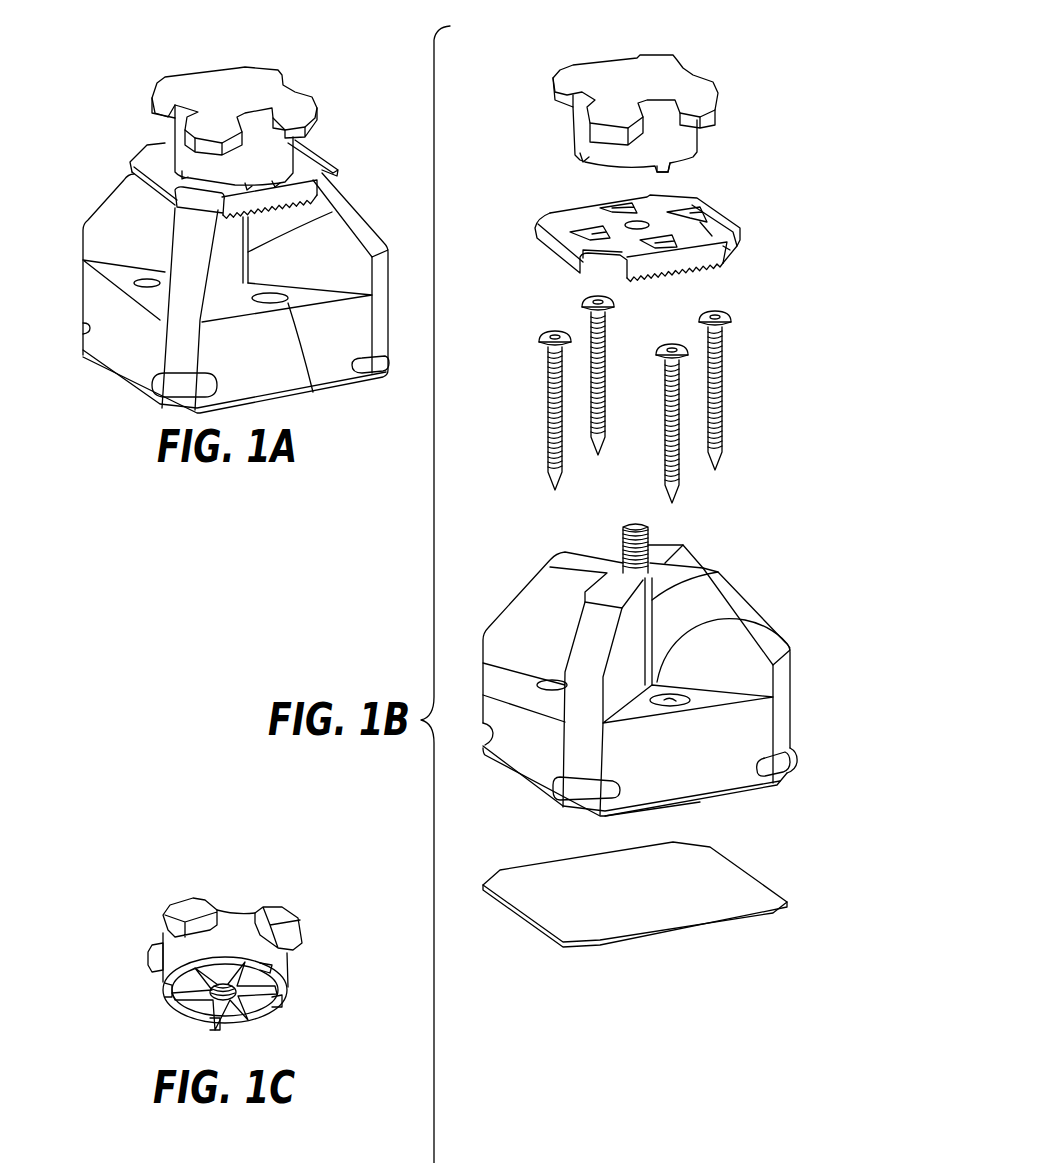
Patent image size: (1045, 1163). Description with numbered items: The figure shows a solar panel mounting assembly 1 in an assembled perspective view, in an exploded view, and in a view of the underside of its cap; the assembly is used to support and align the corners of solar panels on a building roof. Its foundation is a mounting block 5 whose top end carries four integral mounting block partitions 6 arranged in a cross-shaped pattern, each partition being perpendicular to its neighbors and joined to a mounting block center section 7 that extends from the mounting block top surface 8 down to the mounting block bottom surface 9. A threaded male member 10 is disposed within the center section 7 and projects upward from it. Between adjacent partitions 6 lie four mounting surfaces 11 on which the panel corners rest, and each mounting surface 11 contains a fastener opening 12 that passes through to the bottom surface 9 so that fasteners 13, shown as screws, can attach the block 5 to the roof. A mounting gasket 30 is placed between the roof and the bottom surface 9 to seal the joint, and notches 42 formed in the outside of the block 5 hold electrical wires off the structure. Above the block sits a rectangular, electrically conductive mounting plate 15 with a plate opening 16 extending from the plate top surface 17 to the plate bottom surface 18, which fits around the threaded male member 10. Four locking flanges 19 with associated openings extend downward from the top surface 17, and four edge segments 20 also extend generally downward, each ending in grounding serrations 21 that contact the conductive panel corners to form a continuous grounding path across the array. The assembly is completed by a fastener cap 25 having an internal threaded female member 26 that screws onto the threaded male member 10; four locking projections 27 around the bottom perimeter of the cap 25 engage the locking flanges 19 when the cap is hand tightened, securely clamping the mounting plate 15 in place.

In FIG. 1A, the solar panel mounting assembly 1 is at (131, 52).
In FIG. 1A, the mounting block 5 is at (81, 303).
In FIG. 1B, the mounting block 5 is at (723, 777).
In FIG. 1A, the mounting block partitions 6 is at (112, 202).
In FIG. 1B, the mounting block partitions 6 is at (697, 553).
In FIG. 1A, the mounting block center section 7 is at (332, 212).
In FIG. 1B, the mounting block center section 7 is at (697, 577).
In FIG. 1B, the mounting block top surface 8 is at (577, 551).
In FIG. 1B, the mounting block bottom surface 9 is at (690, 803).
In FIG. 1B, the threaded male member 10 is at (651, 530).
In FIG. 1A, the mounting surfaces 11 is at (102, 268).
In FIG. 1B, the mounting surfaces 11 is at (747, 627).
In FIG. 1A, the fastener opening 12 is at (317, 393).
In FIG. 1B, the fastener opening 12 is at (580, 678).
In FIG. 1B, the fasteners 13 is at (605, 318).
In FIG. 1A, the mounting plate 15 is at (312, 148).
In FIG. 1B, the mounting plate 15 is at (737, 222).
In FIG. 1B, the plate opening 16 is at (638, 220).
In FIG. 1B, the plate top surface 17 is at (710, 230).
In FIG. 1B, the plate bottom surface 18 is at (607, 258).
In FIG. 1B, the locking flanges 19 is at (587, 228).
In FIG. 1B, the edge segments 20 is at (725, 252).
In FIG. 1B, the grounding serrations 21 is at (708, 272).
In FIG. 1A, the fastener cap 25 is at (264, 68).
In FIG. 1B, the fastener cap 25 is at (692, 75).
In FIG. 1C, the fastener cap 25 is at (290, 915).
In FIG. 1C, the internal threaded female member 26 is at (243, 1017).
In FIG. 1B, the locking projections 27 is at (583, 158).
In FIG. 1C, the locking projections 27 is at (287, 970).
In FIG. 1B, the mounting gasket 30 is at (687, 933).
In FIG. 1B, the notches 42 is at (487, 735).